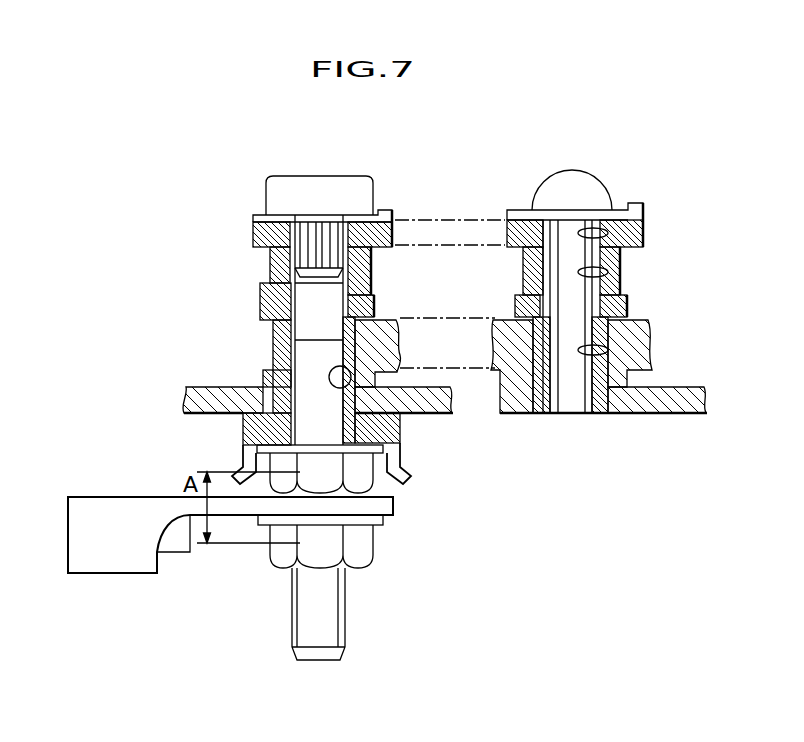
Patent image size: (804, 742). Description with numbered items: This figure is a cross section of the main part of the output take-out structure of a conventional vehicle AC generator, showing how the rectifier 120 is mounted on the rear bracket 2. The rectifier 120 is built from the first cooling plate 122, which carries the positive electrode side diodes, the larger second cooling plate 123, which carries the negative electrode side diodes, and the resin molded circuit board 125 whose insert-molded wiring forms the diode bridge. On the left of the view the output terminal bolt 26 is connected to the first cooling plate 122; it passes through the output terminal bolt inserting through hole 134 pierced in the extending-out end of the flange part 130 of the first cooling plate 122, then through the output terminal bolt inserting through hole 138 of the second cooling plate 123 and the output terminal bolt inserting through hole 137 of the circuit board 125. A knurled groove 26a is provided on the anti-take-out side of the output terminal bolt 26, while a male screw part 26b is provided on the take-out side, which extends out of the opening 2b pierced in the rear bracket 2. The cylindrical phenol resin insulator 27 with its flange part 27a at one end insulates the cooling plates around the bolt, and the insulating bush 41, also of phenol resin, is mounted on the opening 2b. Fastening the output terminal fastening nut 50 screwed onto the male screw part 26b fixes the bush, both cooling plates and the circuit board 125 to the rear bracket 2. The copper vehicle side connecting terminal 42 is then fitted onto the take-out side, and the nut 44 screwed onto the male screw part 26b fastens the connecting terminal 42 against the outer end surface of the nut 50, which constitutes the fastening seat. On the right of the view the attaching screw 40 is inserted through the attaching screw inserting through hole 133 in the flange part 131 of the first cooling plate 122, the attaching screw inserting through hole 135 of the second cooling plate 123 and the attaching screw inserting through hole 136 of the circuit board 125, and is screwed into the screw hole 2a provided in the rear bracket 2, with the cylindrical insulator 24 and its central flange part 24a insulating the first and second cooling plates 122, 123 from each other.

The rear bracket 2 is at (657, 418).
The screw hole 2a is at (585, 395).
The opening 2b is at (346, 372).
The insulator 24 is at (514, 306).
The flange part 24a is at (630, 302).
The output terminal bolt 26 is at (278, 174).
The knurled groove 26a is at (335, 230).
The male screw part 26b is at (292, 612).
The insulator 27 is at (258, 303).
The flange part 27a is at (375, 300).
The attaching screw 40 is at (592, 176).
The insulating bush 41 is at (253, 432).
The vehicle side connecting terminal 42 is at (125, 497).
The nut 44 is at (372, 545).
The output terminal fastening nut 50 is at (393, 460).
The rectifier 120 is at (611, 295).
The first cooling plate 122 is at (374, 258).
The second cooling plate 123 is at (658, 357).
The circuit board 125 is at (648, 210).
The flange part 130 is at (370, 270).
The flange part 131 is at (530, 268).
The attaching screw inserting through hole 133 is at (610, 270).
The output terminal bolt inserting through hole 134 is at (280, 267).
The attaching screw inserting through hole 135 is at (580, 348).
The attaching screw inserting through hole 136 is at (636, 232).
The output terminal bolt inserting through hole 137 is at (262, 240).
The output terminal bolt inserting through hole 138 is at (282, 352).